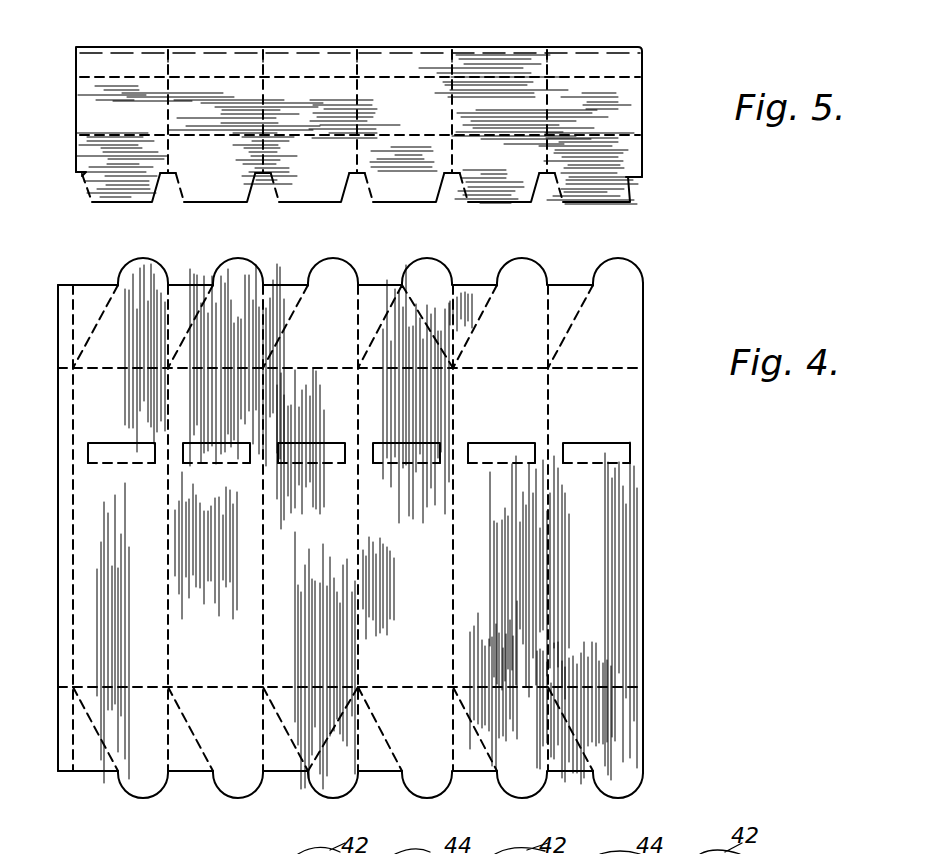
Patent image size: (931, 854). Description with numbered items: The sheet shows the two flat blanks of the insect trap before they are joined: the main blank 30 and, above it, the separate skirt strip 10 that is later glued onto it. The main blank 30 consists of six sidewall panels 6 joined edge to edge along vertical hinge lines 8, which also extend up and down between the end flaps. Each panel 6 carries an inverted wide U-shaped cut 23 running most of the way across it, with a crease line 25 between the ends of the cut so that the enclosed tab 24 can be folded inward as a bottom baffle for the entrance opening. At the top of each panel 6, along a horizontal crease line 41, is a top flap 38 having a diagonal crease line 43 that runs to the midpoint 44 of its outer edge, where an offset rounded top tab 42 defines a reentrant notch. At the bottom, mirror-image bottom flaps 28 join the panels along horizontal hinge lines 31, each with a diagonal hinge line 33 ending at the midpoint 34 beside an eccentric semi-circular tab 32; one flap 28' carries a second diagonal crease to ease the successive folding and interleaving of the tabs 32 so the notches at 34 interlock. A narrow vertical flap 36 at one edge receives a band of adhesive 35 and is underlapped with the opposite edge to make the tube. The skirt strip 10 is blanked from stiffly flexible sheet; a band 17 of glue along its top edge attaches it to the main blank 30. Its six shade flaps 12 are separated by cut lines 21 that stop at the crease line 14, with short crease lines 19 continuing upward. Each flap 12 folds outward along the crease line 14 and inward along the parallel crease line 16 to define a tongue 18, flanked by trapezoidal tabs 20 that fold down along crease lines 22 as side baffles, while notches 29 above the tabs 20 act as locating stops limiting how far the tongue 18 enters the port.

In FIG. 5, the peripheral skirt 10 is at (662, 51).
In FIG. 5, the flap 12 is at (80, 148).
In FIG. 5, the crease line 14 is at (80, 90).
In FIG. 5, the crease line 16 is at (136, 130).
In FIG. 5, the band of adhesive 17 is at (212, 36).
In FIG. 5, the tongue 18 is at (122, 195).
In FIG. 5, the short crease line 19 is at (168, 62).
In FIG. 5, the tab 20 is at (272, 197).
In FIG. 5, the cut line 21 is at (170, 127).
In FIG. 5, the crease line 22 is at (385, 203).
In FIG. 5, the notch 29 is at (80, 173).
In FIG. 4, the main blank 30 is at (710, 523).
In FIG. 4, the panel 6 is at (134, 585).
In FIG. 4, the hinge line 8 is at (352, 306).
In FIG. 4, the U-shaped cut 23 is at (138, 442).
In FIG. 4, the tab 24 is at (105, 448).
In FIG. 4, the crease line 25 is at (148, 470).
In FIG. 4, the bottom flap 28 is at (385, 725).
In FIG. 4, the bottom flap 28' is at (285, 773).
In FIG. 4, the horizontal hinge line 31 is at (148, 675).
In FIG. 4, the semi-circular tab 32 is at (237, 800).
In FIG. 4, the diagonal hinge line 33 is at (97, 720).
In FIG. 4, the midpoint 34 is at (118, 775).
In FIG. 4, the band of adhesive 35 is at (73, 548).
In FIG. 4, the vertical flap 36 is at (62, 503).
In FIG. 4, the top flap 38 is at (198, 347).
In FIG. 4, the horizontal crease line 41 is at (318, 368).
In FIG. 4, the top tab 42 is at (153, 260).
In FIG. 4, the diagonal crease line 43 is at (100, 322).
In FIG. 4, the midpoint 44 is at (307, 278).